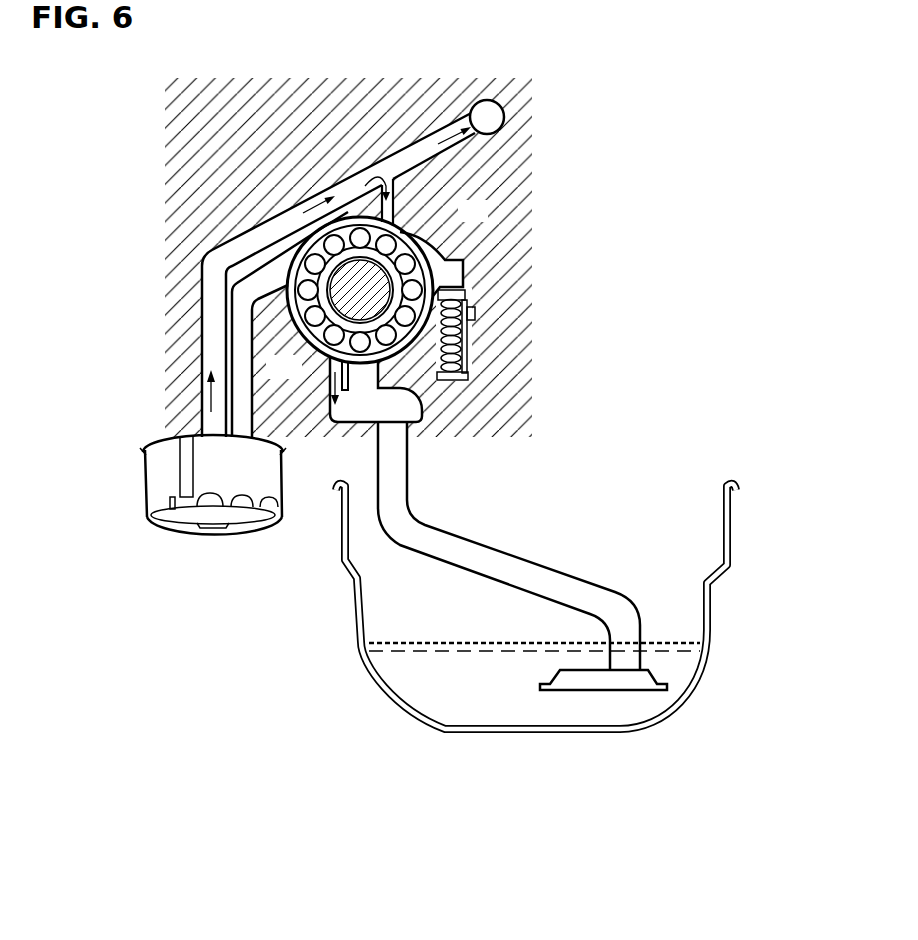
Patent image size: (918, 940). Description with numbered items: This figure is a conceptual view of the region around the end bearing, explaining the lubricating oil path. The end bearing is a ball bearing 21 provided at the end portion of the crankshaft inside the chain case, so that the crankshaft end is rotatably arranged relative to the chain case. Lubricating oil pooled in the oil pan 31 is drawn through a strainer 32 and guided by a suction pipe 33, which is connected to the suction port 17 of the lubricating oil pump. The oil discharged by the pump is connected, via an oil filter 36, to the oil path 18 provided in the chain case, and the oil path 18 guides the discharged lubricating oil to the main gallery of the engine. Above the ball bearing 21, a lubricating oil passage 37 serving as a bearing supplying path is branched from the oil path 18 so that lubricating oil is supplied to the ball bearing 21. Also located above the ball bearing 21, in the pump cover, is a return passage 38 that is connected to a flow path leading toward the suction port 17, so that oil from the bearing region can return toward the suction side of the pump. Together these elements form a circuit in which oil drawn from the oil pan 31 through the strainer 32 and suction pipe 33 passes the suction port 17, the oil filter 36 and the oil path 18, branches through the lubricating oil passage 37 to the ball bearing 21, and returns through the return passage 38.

The suction port 17 is at (360, 368).
The oil path 18 is at (495, 117).
The ball bearing 21 is at (405, 350).
The oil pan 31 is at (712, 612).
The strainer 32 is at (597, 683).
The suction pipe 33 is at (397, 473).
The oil filter 36 is at (147, 490).
The lubricating oil passage 37 is at (393, 199).
The return passage 38 is at (330, 378).